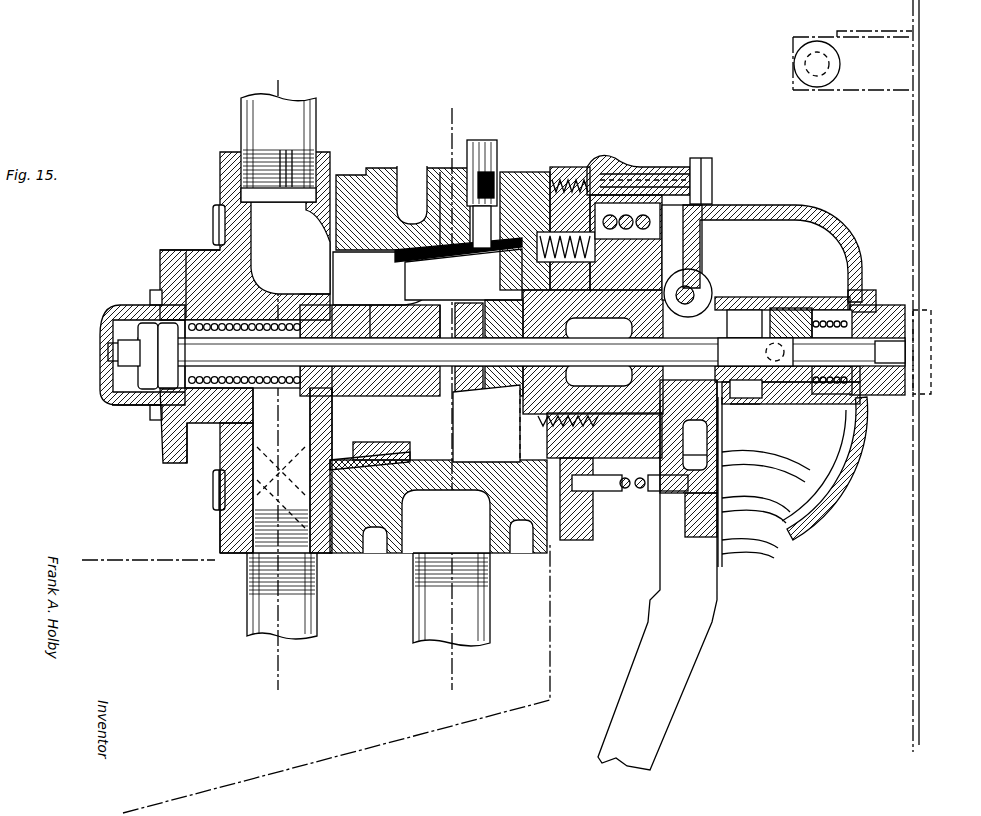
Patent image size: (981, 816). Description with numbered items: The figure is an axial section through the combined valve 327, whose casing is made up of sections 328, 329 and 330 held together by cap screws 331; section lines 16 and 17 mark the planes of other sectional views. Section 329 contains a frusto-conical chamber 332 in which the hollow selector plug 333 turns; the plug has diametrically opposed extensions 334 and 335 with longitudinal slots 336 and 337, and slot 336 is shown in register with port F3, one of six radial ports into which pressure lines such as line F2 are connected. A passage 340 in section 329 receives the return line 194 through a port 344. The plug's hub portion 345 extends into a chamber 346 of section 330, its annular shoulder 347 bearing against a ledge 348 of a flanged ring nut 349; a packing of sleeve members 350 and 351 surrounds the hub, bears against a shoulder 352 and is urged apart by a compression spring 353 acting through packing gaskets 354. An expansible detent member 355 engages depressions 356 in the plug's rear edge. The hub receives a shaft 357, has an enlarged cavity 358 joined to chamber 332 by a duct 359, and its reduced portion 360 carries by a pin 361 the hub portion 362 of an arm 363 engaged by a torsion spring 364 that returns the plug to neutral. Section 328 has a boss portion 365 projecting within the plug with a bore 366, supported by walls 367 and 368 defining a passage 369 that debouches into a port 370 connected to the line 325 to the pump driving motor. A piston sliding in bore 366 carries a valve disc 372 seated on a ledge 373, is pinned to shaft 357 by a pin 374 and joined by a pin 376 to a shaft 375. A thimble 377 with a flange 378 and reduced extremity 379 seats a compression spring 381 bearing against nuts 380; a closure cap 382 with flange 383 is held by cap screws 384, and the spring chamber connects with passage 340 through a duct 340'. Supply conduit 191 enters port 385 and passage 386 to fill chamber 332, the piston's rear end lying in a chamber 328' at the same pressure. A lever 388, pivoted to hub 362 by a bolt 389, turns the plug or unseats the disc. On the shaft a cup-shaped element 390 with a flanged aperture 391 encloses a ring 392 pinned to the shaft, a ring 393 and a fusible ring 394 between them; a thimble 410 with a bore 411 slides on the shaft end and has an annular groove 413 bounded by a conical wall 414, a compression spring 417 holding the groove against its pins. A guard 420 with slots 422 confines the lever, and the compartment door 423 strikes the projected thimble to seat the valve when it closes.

The section line 16- 16 is at (295, 655).
The section line 17- 17 is at (442, 655).
The pressure supply conduit 191 is at (260, 610).
The return line 194 is at (433, 620).
The line to hydraulic pump driving motor 325 is at (294, 110).
The combined valve 327 is at (355, 170).
The casing section 328 is at (245, 221).
The chamber 328' is at (226, 470).
The casing section 329 is at (534, 172).
The casing section 330 is at (570, 170).
The cap screws 331 is at (214, 219).
The frusto-conical chamber 332 is at (408, 195).
The selector plug 333 is at (396, 438).
The extension 334 is at (446, 258).
The extension 335 is at (408, 433).
The slot 336 is at (443, 207).
The slot 337 is at (476, 470).
The passage 340 is at (426, 542).
The duct 340' is at (153, 450).
The port 344 is at (404, 612).
The hub portion 345 is at (468, 415).
The chamber 346 is at (535, 542).
The annular shoulder 347 is at (666, 275).
The ledge 348 is at (694, 287).
The flanged ring nut 349 is at (670, 213).
The sleeve member 350 is at (650, 214).
The sleeve member 351 is at (668, 178).
The shoulder 352 is at (530, 291).
The compression spring 353 is at (610, 493).
The packing gaskets 354 is at (619, 482).
The expansible detent member 355 is at (612, 178).
The depressions 356 is at (463, 274).
The shaft 357 is at (940, 334).
The enlarged cavity 358 is at (599, 352).
The duct 359 is at (570, 384).
The reduced portion 360 is at (707, 315).
The pin 361 is at (730, 437).
The hub portion 362 is at (698, 423).
The arm 363 is at (684, 460).
The torsion spring 364 is at (676, 513).
The boss portion 365 is at (291, 430).
The bore 366 is at (370, 350).
The wall 367 is at (392, 280).
The wall 368 is at (300, 282).
The passage 369 is at (328, 332).
The port 370 is at (243, 190).
The valve disc 372 is at (469, 349).
The ledge 373 is at (450, 310).
The pin 374 is at (504, 348).
The shaft 375 is at (112, 388).
The pin 376 is at (454, 420).
The thimble 377 is at (303, 402).
The flange 378 is at (206, 250).
The reduced extremity 379 is at (356, 332).
The nuts 380 is at (137, 352).
The compression spring 381 is at (163, 440).
The closure cap 382 is at (103, 321).
The flange 383 is at (160, 261).
The cap screws 384 is at (150, 281).
The port 385 is at (222, 535).
The passage 386 is at (223, 497).
The lever 388 is at (687, 634).
The bolt 389 is at (714, 290).
The cup-shaped element 390 is at (771, 300).
The flanged aperture 391 is at (521, 352).
The ring 392 is at (776, 312).
The ring 393 is at (745, 405).
The fusible ring 394 is at (790, 315).
The thimble 410 is at (888, 310).
The bore 411 is at (888, 358).
The annular groove 413 is at (797, 404).
The conical wall 414 is at (803, 400).
The compression spring 417 is at (858, 306).
The guard 420 is at (753, 206).
The slots 422 is at (763, 478).
The door 423 is at (914, 141).
The pressure line F2 is at (479, 141).
The port F3 is at (484, 208).